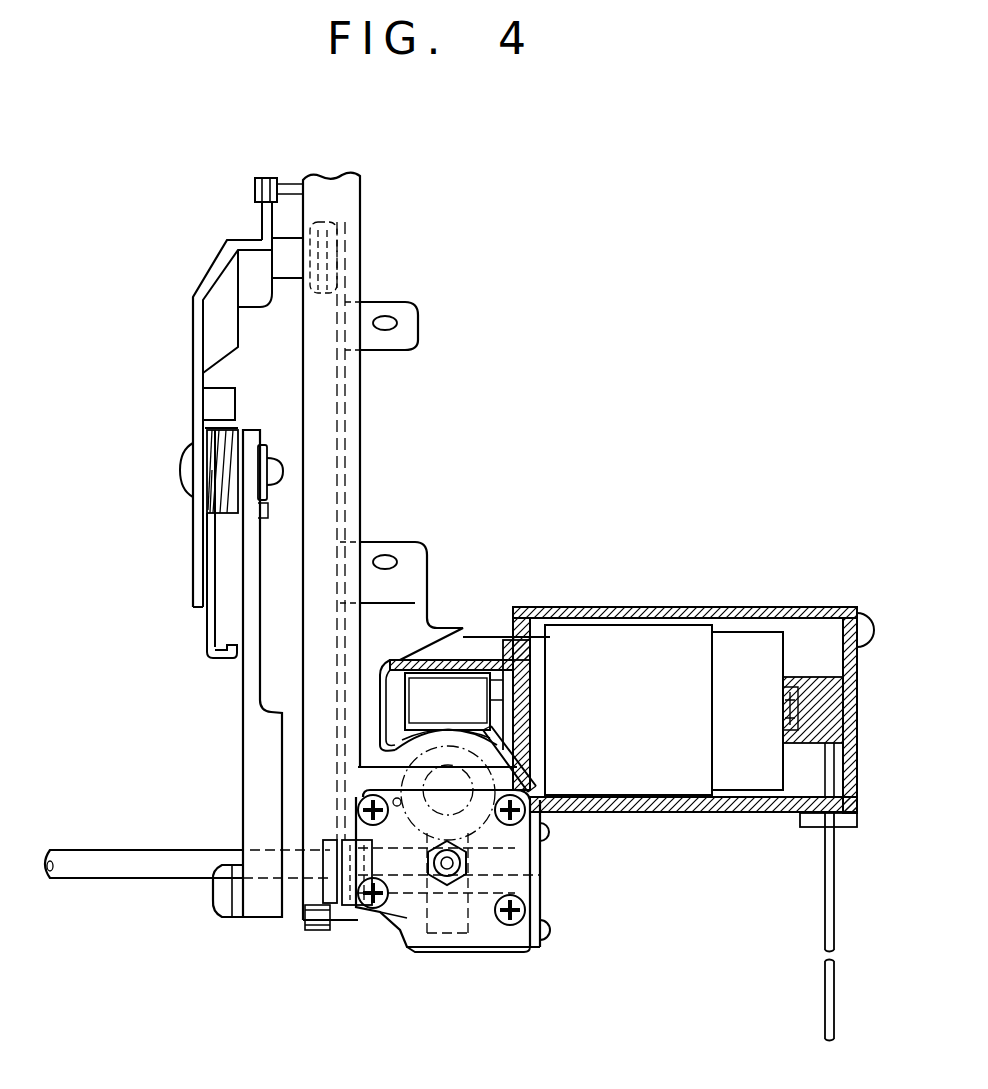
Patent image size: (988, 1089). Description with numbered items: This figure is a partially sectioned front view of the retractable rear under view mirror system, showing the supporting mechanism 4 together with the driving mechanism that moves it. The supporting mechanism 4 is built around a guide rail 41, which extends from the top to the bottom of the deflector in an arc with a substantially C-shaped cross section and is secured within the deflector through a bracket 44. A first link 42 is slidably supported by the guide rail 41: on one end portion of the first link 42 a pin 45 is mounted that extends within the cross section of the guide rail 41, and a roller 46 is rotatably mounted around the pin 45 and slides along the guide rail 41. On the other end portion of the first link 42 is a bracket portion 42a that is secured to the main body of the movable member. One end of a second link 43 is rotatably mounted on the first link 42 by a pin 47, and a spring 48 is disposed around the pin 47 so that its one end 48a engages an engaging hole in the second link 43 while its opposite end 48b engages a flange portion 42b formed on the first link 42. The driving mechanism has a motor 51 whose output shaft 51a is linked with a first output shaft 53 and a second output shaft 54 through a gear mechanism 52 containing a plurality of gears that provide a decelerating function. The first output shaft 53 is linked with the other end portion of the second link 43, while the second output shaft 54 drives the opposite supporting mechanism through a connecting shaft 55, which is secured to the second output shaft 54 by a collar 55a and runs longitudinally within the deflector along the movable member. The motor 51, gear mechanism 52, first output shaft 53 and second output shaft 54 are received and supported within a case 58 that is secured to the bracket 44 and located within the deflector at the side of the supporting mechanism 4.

The supporting mechanism 4 is at (150, 430).
The guide rail 41 is at (318, 458).
The first link 42 is at (222, 327).
The bracket portion 42a is at (197, 588).
The flange portion 42b is at (207, 402).
The second link 43 is at (258, 742).
The bracket 44 is at (385, 305).
The pin 45 is at (283, 270).
The roller 46 is at (335, 232).
The pin 47 is at (190, 463).
The spring 48 is at (200, 432).
The one end of spring 48a is at (262, 522).
The opposite end of spring 48b is at (212, 625).
The motor 51 is at (625, 645).
The output shaft of motor 51a is at (395, 705).
The gear mechanism 52 is at (505, 725).
The first output shaft 53 is at (403, 900).
The second output shaft 54 is at (500, 865).
The connecting shaft 55 is at (92, 868).
The collar 55a is at (307, 897).
The case 58 is at (757, 607).